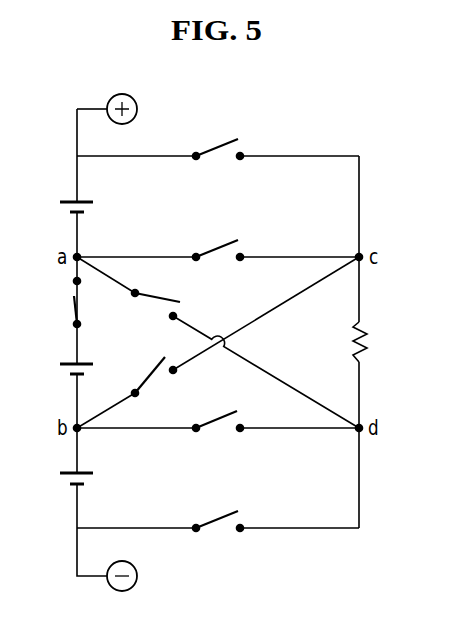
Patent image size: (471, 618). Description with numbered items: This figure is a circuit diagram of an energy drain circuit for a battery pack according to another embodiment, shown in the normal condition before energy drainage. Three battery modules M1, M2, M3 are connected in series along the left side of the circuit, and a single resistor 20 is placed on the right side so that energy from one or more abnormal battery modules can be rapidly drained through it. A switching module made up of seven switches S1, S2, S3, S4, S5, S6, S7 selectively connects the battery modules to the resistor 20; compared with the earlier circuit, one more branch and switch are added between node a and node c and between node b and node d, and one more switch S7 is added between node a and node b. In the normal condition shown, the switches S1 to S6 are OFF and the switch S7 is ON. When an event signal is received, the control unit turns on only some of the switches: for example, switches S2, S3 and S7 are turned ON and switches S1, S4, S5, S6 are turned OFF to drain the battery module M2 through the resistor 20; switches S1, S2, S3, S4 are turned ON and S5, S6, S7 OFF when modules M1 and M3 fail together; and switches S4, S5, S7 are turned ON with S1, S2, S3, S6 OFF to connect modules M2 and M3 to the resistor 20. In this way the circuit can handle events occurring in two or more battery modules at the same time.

The resistor 20 is at (382, 342).
The switch S1 is at (218, 502).
The switch S2 is at (218, 342).
The switch S3 is at (218, 340).
The switch S4 is at (218, 130).
The switch S5 is at (218, 401).
The switch S6 is at (218, 231).
The switch S7 is at (58, 303).
The battery module M1 is at (58, 478).
The battery module M2 is at (58, 369).
The battery module M3 is at (58, 209).